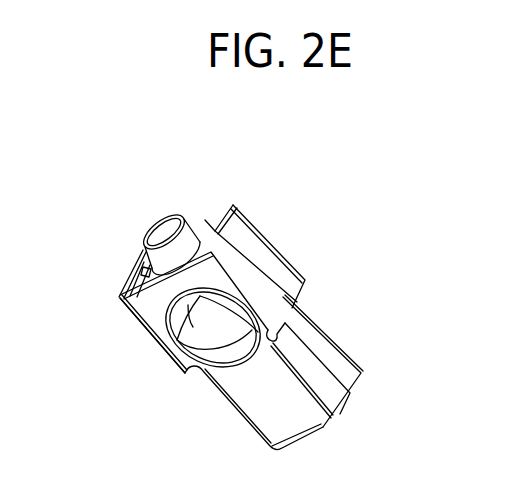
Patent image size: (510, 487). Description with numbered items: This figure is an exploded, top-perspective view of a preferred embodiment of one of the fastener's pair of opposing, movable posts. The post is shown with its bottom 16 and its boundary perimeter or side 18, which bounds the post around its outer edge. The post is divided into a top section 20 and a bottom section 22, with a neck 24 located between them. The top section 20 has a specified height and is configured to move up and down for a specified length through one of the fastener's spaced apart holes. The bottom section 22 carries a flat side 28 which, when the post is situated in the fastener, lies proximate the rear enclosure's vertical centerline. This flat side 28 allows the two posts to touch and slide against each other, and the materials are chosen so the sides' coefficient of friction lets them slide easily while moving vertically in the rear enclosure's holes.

The bottom 16 is at (146, 274).
The side 18 is at (336, 340).
The top section 20 is at (230, 400).
The bottom section 22 is at (150, 328).
The neck 24 is at (155, 231).
The flat side 28 is at (292, 271).